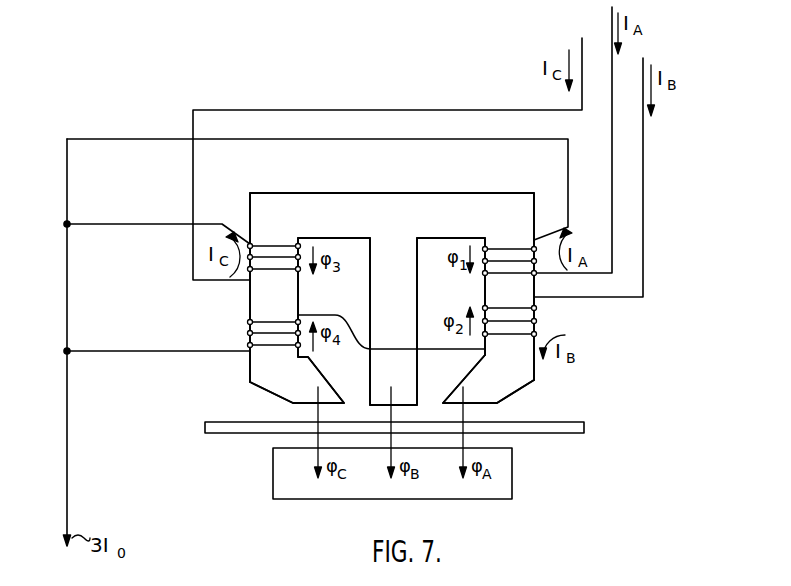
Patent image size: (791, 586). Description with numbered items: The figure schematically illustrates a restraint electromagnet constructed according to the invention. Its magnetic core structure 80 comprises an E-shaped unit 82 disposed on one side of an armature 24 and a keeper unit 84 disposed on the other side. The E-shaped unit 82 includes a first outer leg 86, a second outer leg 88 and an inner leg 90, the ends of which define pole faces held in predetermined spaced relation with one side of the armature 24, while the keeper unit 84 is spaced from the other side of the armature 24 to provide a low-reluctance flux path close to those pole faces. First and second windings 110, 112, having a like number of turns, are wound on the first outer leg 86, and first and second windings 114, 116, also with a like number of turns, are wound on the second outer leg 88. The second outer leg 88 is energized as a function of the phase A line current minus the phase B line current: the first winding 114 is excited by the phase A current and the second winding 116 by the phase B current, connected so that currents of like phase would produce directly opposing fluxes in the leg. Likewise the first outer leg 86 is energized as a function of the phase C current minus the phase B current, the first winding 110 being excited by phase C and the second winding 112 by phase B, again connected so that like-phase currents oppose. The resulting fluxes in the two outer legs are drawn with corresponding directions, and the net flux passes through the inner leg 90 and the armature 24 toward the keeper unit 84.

The armature 24 is at (555, 433).
The magnetic core structure 80 is at (262, 386).
The E-shaped unit 82 is at (250, 193).
The keeper unit 84 is at (273, 485).
The first outer leg 86 is at (250, 297).
The second outer leg 88 is at (495, 288).
The inner leg 90 is at (383, 290).
The first winding 110 is at (257, 246).
The second winding 112 is at (262, 350).
The first winding 114 is at (520, 249).
The second winding 116 is at (527, 334).